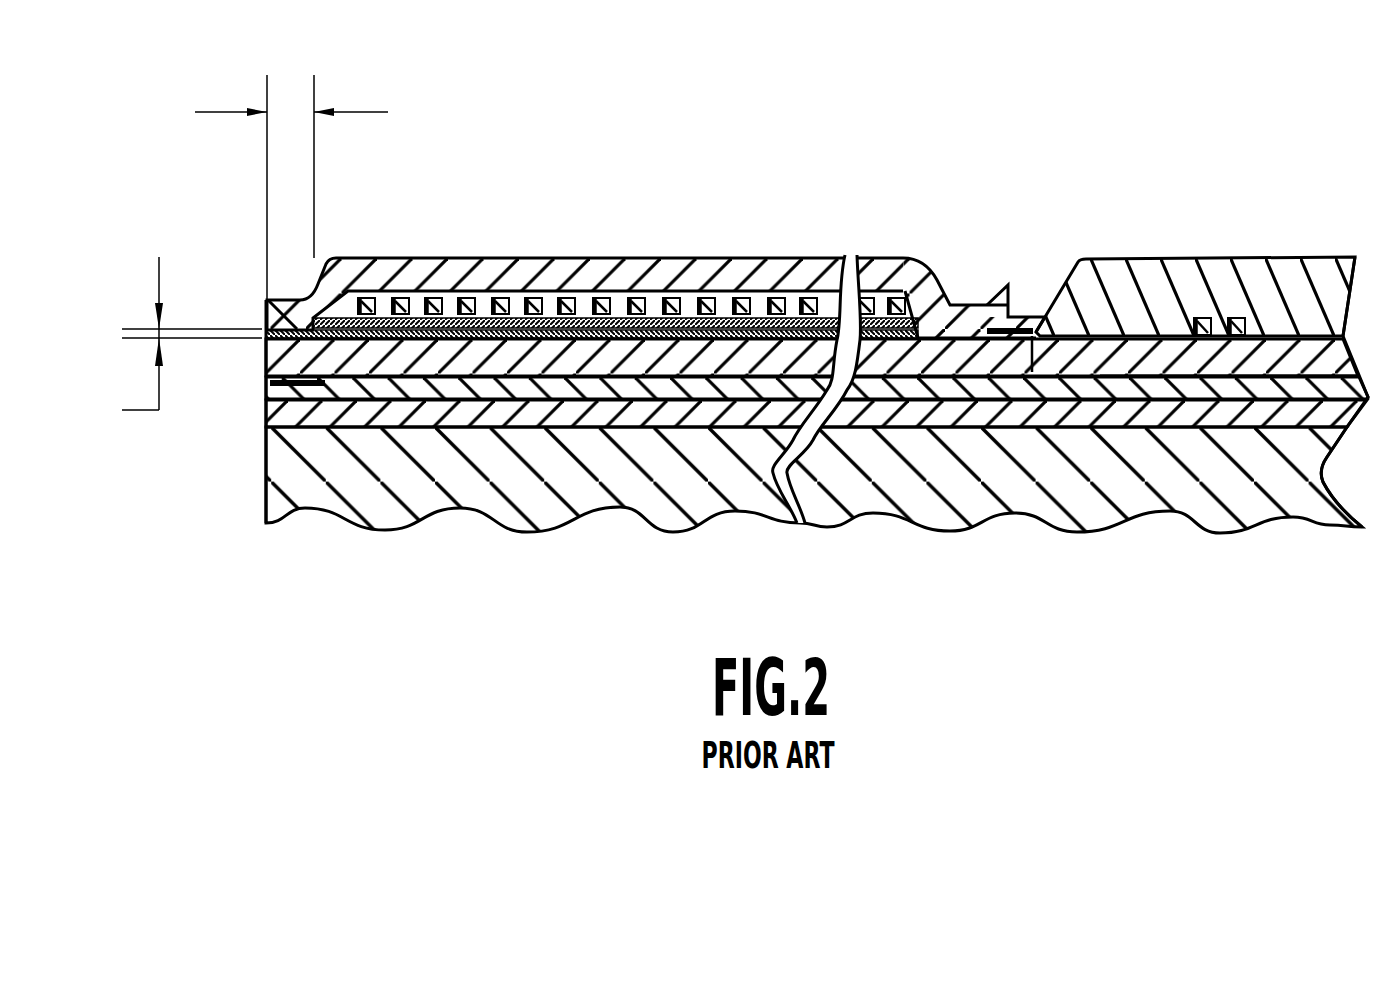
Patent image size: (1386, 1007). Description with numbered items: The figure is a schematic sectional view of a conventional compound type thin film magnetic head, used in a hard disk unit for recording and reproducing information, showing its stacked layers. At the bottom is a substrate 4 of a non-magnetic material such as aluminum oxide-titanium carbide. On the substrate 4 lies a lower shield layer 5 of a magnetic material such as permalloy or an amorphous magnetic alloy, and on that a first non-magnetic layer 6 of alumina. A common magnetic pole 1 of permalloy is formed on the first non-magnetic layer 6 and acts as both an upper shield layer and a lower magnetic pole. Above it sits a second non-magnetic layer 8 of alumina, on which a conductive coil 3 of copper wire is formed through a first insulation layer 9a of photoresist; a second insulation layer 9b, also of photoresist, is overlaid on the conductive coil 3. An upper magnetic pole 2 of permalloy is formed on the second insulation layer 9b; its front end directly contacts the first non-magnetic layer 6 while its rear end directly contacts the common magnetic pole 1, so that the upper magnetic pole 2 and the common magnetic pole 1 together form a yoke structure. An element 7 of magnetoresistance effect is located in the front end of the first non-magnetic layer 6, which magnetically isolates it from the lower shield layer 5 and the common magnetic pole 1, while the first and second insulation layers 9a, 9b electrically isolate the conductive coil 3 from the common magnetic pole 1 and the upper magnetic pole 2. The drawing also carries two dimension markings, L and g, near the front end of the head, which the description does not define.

The common magnetic pole 1 is at (266, 362).
The upper magnetic pole 2 is at (355, 262).
The conductive coil 3 is at (908, 285).
The substrate 4 is at (266, 470).
The lower shield layer 5 is at (677, 417).
The first non-magnetic layer 6 is at (1153, 392).
The element of magnetoresistance effect 7 is at (293, 386).
The second non-magnetic layer 8 is at (260, 335).
The first insulation layer 9a is at (763, 317).
The second insulation layer 9b is at (530, 297).
The pole length L is at (291, 187).
The gap length g is at (192, 333).